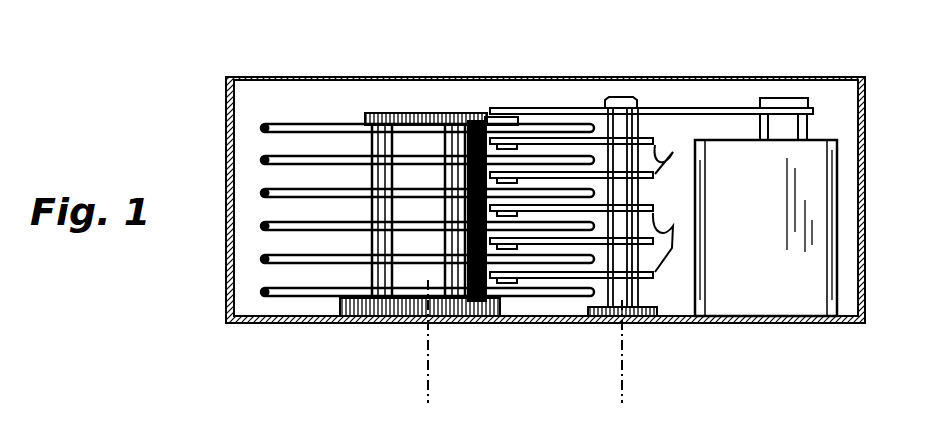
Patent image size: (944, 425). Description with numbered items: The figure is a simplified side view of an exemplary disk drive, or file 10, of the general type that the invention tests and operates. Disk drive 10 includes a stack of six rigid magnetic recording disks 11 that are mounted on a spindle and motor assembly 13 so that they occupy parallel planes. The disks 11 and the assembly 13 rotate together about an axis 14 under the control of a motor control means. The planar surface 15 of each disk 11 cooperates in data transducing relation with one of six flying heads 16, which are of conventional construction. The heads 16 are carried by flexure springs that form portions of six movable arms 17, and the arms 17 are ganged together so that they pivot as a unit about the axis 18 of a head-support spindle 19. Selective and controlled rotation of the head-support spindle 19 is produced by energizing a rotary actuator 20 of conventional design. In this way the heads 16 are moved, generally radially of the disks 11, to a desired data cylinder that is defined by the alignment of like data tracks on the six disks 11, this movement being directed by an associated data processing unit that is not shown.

The disk drive 10 is at (182, 117).
The rigid magnetic recording disks 11 is at (268, 259).
The spindle and motor assembly 13 is at (408, 277).
The axis 14 is at (420, 357).
The planar surface 15 is at (323, 126).
The flying heads 16 is at (490, 119).
The movable arms 17 is at (673, 196).
The axis of head-support spindle 18 is at (622, 370).
The head-support spindle 19 is at (640, 287).
The rotary actuator 20 is at (768, 298).